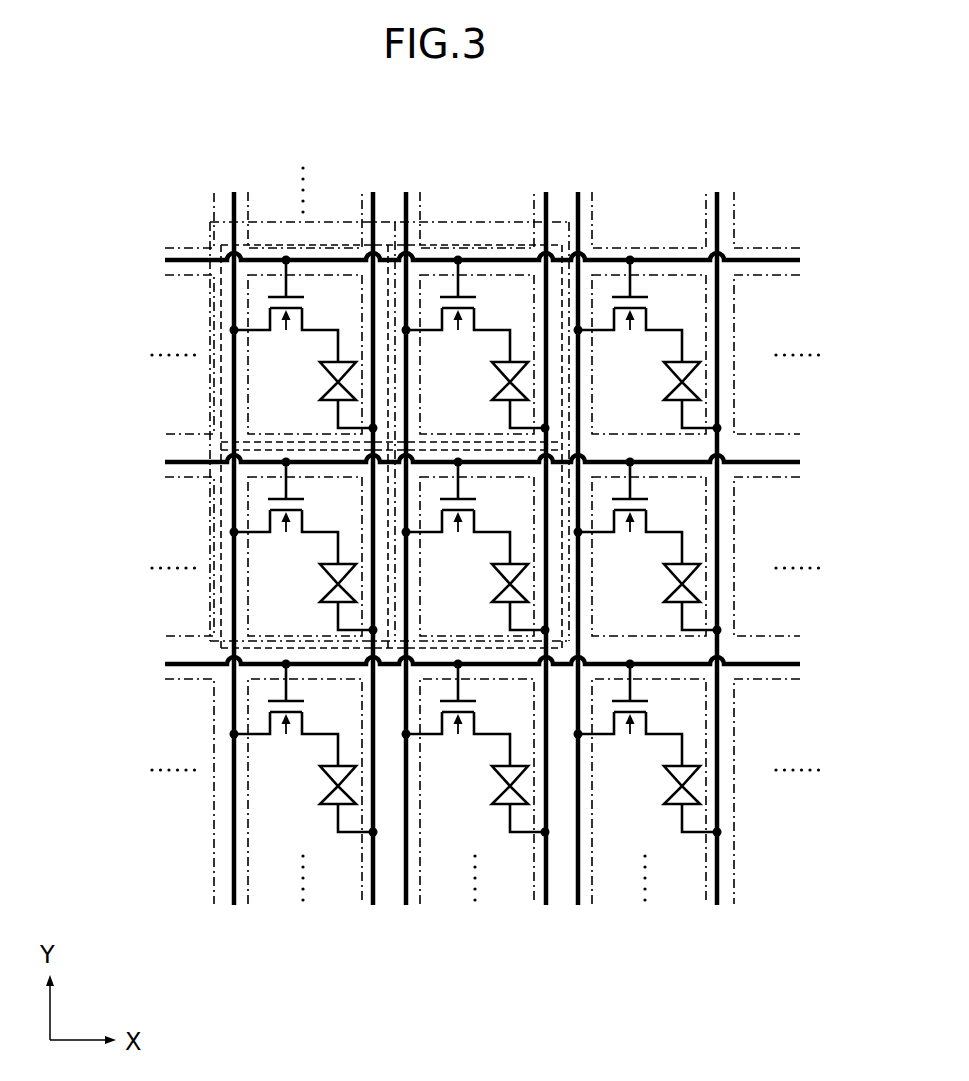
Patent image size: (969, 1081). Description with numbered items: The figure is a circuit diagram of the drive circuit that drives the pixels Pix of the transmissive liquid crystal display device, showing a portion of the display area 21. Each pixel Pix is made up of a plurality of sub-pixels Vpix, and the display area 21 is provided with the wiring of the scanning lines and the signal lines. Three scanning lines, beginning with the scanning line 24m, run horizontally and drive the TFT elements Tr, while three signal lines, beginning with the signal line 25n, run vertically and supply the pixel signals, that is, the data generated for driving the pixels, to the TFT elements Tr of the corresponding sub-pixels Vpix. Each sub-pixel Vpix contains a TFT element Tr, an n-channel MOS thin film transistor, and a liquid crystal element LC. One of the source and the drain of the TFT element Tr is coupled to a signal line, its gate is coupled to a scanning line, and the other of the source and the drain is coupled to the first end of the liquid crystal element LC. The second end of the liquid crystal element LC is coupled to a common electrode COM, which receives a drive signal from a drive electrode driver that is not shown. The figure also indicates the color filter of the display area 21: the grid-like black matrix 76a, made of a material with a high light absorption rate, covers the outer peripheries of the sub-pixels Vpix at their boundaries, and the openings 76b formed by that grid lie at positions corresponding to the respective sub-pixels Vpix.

The display area 21 is at (719, 161).
The scanning line 24m is at (202, 258).
The signal line 25n is at (232, 884).
The black matrix 76a is at (790, 246).
The opening 76b is at (670, 287).
The common electrode COM is at (716, 883).
The TFT element Tr is at (626, 342).
The liquid crystal element LC is at (668, 387).
The pixel Pix is at (525, 222).
The sub-pixel Vpix is at (562, 583).